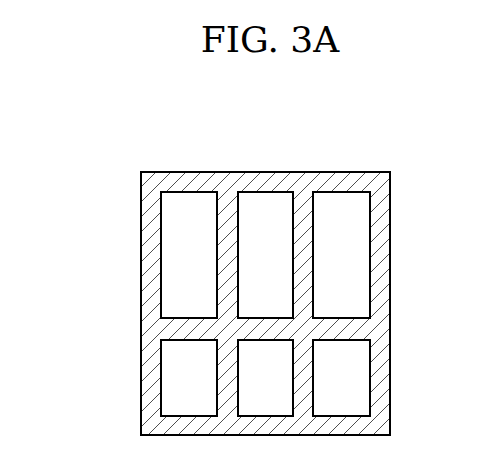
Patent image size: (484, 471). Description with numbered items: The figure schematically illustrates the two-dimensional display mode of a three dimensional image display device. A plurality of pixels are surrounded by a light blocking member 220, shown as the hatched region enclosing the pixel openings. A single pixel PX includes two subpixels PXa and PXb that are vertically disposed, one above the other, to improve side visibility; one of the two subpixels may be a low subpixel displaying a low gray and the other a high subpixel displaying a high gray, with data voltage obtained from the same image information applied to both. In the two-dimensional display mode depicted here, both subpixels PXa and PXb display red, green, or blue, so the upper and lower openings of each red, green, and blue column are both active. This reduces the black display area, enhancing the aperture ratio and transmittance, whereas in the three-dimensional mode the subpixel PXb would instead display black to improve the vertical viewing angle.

The light blocking member 220 is at (390, 205).
The pixel PX is at (60, 245).
The subpixel PXa is at (161, 258).
The subpixel PXb is at (161, 388).